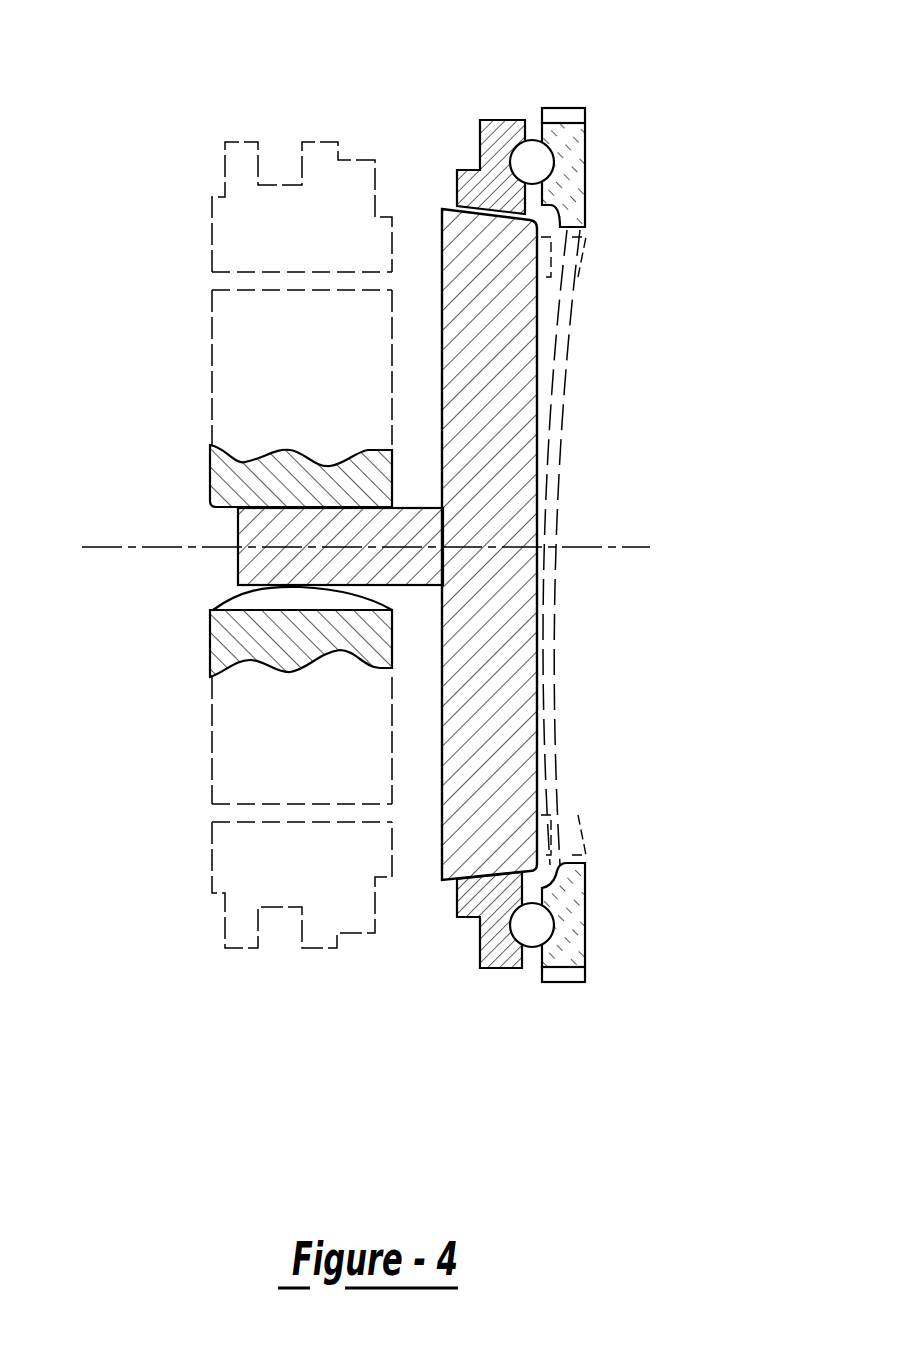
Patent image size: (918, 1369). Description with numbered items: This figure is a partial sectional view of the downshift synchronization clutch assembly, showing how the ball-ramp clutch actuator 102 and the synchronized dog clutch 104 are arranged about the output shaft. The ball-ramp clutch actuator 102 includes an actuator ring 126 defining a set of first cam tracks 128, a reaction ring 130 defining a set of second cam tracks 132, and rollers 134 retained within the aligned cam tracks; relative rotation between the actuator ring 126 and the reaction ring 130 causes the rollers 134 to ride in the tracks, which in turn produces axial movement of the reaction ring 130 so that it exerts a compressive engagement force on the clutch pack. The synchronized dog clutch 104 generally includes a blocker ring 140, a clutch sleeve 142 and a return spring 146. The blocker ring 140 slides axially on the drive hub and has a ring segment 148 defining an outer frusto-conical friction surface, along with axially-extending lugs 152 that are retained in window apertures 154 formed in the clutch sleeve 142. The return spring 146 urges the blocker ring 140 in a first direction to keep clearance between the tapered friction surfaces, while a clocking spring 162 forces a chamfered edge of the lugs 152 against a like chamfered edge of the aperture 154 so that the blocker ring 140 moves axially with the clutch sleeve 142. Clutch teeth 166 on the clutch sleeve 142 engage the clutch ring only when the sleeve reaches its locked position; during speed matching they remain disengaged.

The ball-ramp clutch actuator 102 is at (573, 113).
The synchronized dog clutch 104 is at (208, 489).
The actuator ring 126 is at (498, 958).
The first cam tracks 128 is at (510, 160).
The reaction ring 130 is at (577, 930).
The second cam tracks 132 is at (565, 163).
The rollers 134 is at (535, 925).
The blocker ring 140 is at (416, 542).
The clutch sleeve 142 is at (208, 489).
The return spring 146 is at (580, 297).
The ring segment 148 is at (500, 418).
The lugs 152 is at (428, 507).
The window apertures 154 is at (227, 512).
The clocking spring 162 is at (230, 596).
The clutch teeth 166 is at (365, 177).